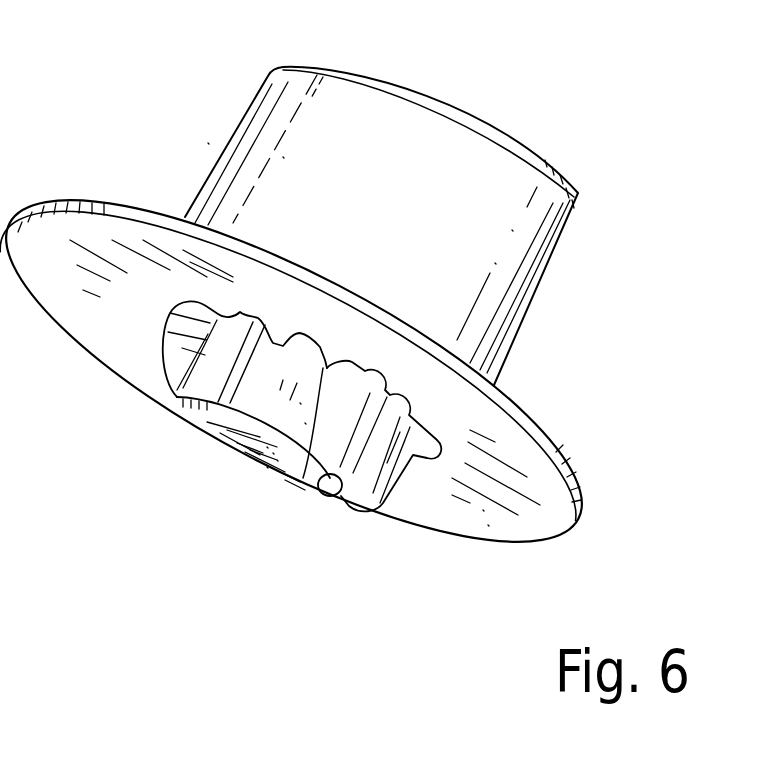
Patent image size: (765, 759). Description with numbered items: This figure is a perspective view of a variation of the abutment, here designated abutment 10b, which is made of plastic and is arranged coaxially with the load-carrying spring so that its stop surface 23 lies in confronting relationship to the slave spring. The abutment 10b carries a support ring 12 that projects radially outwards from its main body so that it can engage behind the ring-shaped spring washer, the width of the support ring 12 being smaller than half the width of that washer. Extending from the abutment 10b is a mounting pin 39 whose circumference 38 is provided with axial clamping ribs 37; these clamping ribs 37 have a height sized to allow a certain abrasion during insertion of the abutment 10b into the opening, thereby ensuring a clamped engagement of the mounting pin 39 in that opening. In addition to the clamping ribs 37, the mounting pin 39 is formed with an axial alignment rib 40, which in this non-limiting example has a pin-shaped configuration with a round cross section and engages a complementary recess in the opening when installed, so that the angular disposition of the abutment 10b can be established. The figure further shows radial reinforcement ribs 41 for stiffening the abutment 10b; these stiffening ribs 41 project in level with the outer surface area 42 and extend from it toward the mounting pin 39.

The abutment 10b is at (549, 277).
The support ring 12 is at (537, 421).
The stop surface 23 is at (477, 109).
The axial clamping ribs 37 is at (178, 388).
The circumference 38 is at (263, 387).
The mounting pin 39 is at (250, 473).
The axial alignment rib 40 is at (341, 500).
The radial reinforcement ribs 41 is at (303, 478).
The outer surface area 42 is at (507, 338).